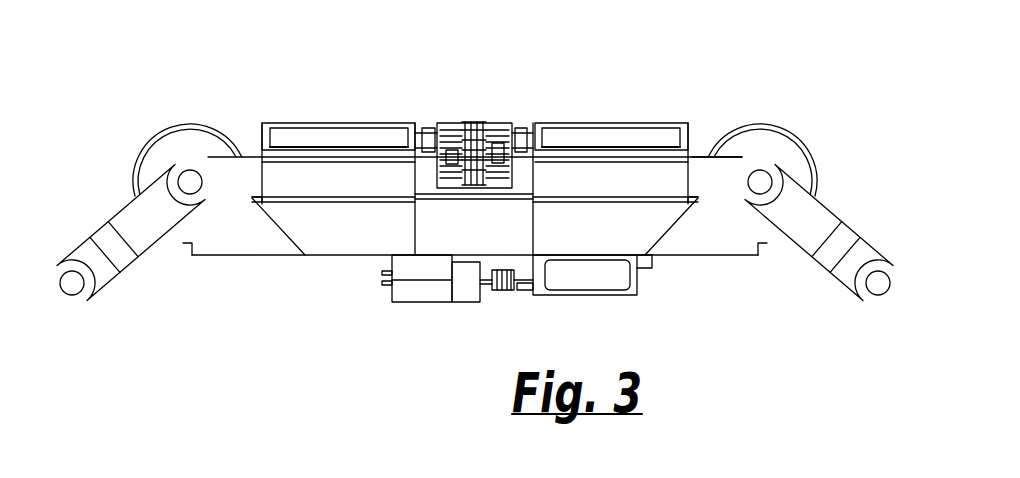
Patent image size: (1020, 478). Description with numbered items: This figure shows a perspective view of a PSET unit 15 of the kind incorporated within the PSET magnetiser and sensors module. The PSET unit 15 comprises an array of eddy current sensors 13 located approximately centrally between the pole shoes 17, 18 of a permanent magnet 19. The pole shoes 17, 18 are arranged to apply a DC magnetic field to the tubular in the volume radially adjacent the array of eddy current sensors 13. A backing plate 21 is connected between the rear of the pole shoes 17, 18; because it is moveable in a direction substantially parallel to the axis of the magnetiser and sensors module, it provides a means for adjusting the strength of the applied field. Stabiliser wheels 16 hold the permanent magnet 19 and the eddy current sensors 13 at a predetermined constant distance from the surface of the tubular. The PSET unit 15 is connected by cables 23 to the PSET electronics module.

The array of eddy current sensors 13 is at (455, 122).
The PSET unit 15 is at (282, 322).
The stabiliser wheel 16 is at (160, 132).
The pole shoe 17 is at (327, 120).
The pole shoe 18 is at (607, 122).
The permanent magnet 19 is at (692, 110).
The backing plate 21 is at (362, 182).
The cable 23 is at (388, 283).